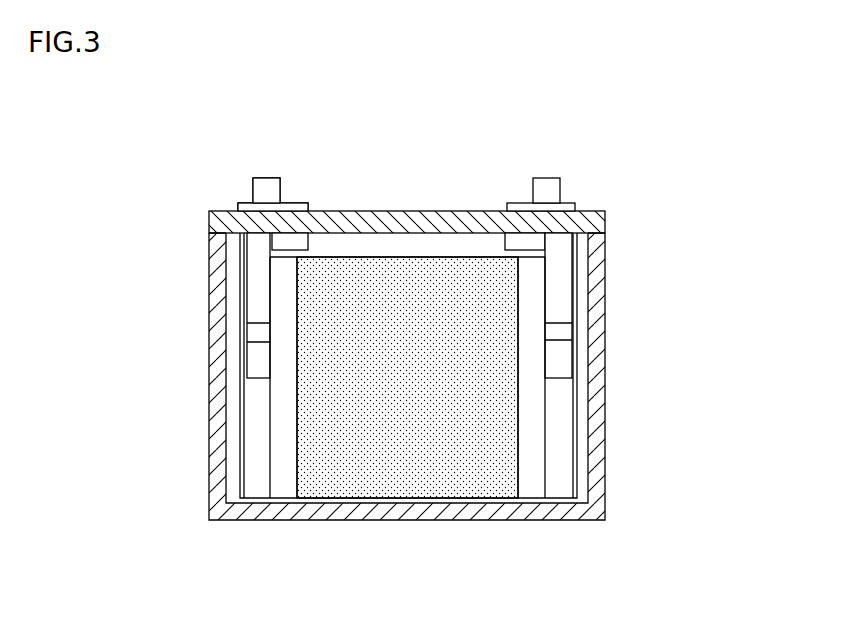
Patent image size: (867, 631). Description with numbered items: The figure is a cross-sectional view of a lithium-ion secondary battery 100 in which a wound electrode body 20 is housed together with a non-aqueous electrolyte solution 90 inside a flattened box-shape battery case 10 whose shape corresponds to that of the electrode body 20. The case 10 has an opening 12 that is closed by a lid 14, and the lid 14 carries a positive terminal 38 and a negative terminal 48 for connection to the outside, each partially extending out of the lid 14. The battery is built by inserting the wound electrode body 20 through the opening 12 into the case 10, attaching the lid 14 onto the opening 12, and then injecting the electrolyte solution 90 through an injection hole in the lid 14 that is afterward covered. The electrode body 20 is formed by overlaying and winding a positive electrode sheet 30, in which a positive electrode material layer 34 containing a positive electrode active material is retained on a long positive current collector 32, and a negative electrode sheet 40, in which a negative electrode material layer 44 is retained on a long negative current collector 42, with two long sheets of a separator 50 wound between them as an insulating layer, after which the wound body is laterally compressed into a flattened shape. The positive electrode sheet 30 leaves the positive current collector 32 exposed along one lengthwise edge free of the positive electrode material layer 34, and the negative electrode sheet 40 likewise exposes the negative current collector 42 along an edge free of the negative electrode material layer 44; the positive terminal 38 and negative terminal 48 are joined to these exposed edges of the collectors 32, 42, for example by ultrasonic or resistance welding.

The lithium-ion secondary battery 100 is at (180, 98).
The battery case 10 is at (609, 462).
The opening 12 is at (385, 250).
The lid 14 is at (348, 208).
The wound electrode body 20 is at (428, 255).
The positive electrode sheet 30 is at (288, 415).
The positive current collector 32 is at (268, 488).
The positive electrode material layer 34 is at (355, 462).
The positive terminal 38 is at (263, 185).
The negative electrode sheet 40 is at (556, 412).
The negative current collector 42 is at (543, 488).
The negative electrode material layer 44 is at (490, 468).
The negative terminal 48 is at (547, 182).
The separator 50 is at (420, 487).
The non-aqueous electrolyte solution 90 is at (407, 431).